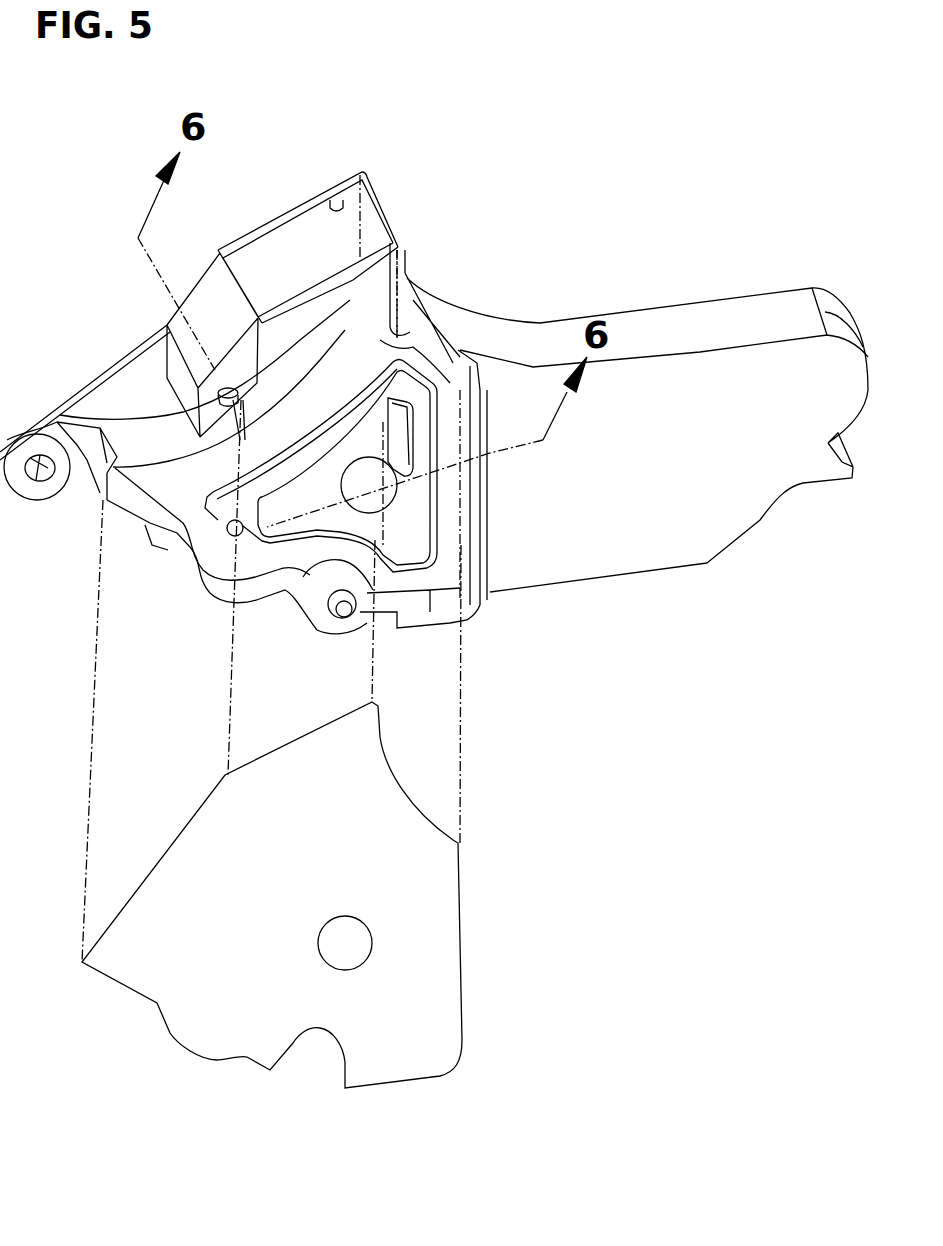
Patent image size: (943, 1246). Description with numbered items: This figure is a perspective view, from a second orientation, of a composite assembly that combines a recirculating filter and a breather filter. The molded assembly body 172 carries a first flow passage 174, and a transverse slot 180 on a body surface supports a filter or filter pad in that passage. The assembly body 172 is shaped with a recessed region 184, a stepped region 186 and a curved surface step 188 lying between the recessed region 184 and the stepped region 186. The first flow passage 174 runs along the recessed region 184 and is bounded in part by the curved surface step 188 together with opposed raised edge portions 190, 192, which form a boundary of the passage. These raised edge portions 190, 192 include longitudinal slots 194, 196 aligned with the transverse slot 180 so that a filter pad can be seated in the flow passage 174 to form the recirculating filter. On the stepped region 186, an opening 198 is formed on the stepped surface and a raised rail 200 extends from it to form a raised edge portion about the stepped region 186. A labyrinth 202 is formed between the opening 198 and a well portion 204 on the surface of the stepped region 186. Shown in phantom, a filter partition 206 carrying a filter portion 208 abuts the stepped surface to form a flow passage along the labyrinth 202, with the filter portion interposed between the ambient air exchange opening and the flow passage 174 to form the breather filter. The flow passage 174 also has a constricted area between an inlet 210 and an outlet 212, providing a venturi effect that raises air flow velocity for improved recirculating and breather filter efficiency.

The assembly body 172 is at (763, 313).
The first flow passage 174 is at (126, 391).
The transverse slot 180 is at (276, 290).
The recessed region 184 is at (342, 205).
The stepped region 186 is at (497, 390).
The curved surface step 188 is at (330, 375).
The raised edge portion 190 is at (203, 285).
The raised edge portion 192 is at (400, 267).
The longitudinal slot 194 is at (240, 398).
The longitudinal slot 196 is at (413, 350).
The opening 198 is at (233, 543).
The raised rail 200 is at (483, 578).
The labyrinth 202 is at (428, 590).
The well portion 204 is at (396, 487).
The filter partition 206 is at (448, 964).
The filter portion 208 is at (348, 917).
The inlet 210 is at (295, 200).
The outlet 212 is at (141, 323).